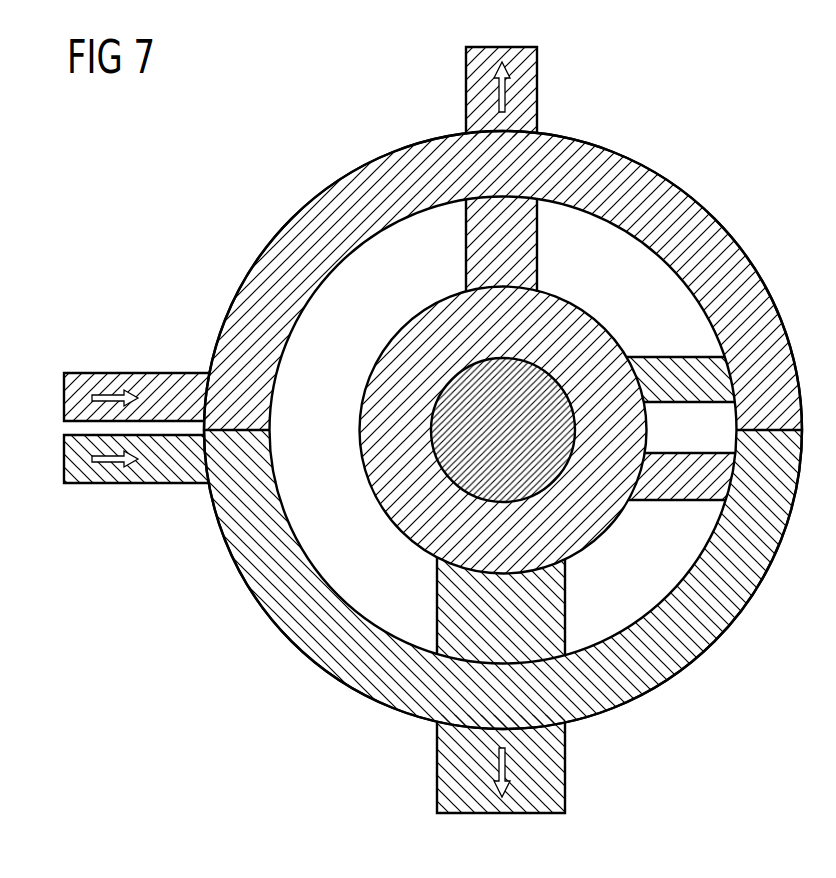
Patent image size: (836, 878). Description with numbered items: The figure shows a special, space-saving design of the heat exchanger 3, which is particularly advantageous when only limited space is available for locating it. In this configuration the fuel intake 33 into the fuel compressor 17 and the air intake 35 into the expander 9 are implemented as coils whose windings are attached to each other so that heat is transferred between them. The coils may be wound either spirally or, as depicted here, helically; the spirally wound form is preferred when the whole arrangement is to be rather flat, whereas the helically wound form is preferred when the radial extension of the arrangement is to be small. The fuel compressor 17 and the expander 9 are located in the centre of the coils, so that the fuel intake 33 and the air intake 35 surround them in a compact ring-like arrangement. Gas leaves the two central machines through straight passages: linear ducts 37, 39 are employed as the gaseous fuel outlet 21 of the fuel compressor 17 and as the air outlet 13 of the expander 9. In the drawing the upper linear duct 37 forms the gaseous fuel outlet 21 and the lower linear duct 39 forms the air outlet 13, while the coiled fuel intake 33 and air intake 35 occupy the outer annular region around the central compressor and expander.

The heat exchanger 3 is at (236, 692).
The expander 9 is at (600, 513).
The air outlet 13 is at (552, 593).
The fuel compressor 17 is at (588, 328).
The gaseous fuel outlet 21 is at (527, 238).
The fuel intake 33 is at (623, 158).
The air intake 35 is at (703, 638).
The linear duct 37 is at (537, 80).
The linear duct 39 is at (552, 773).